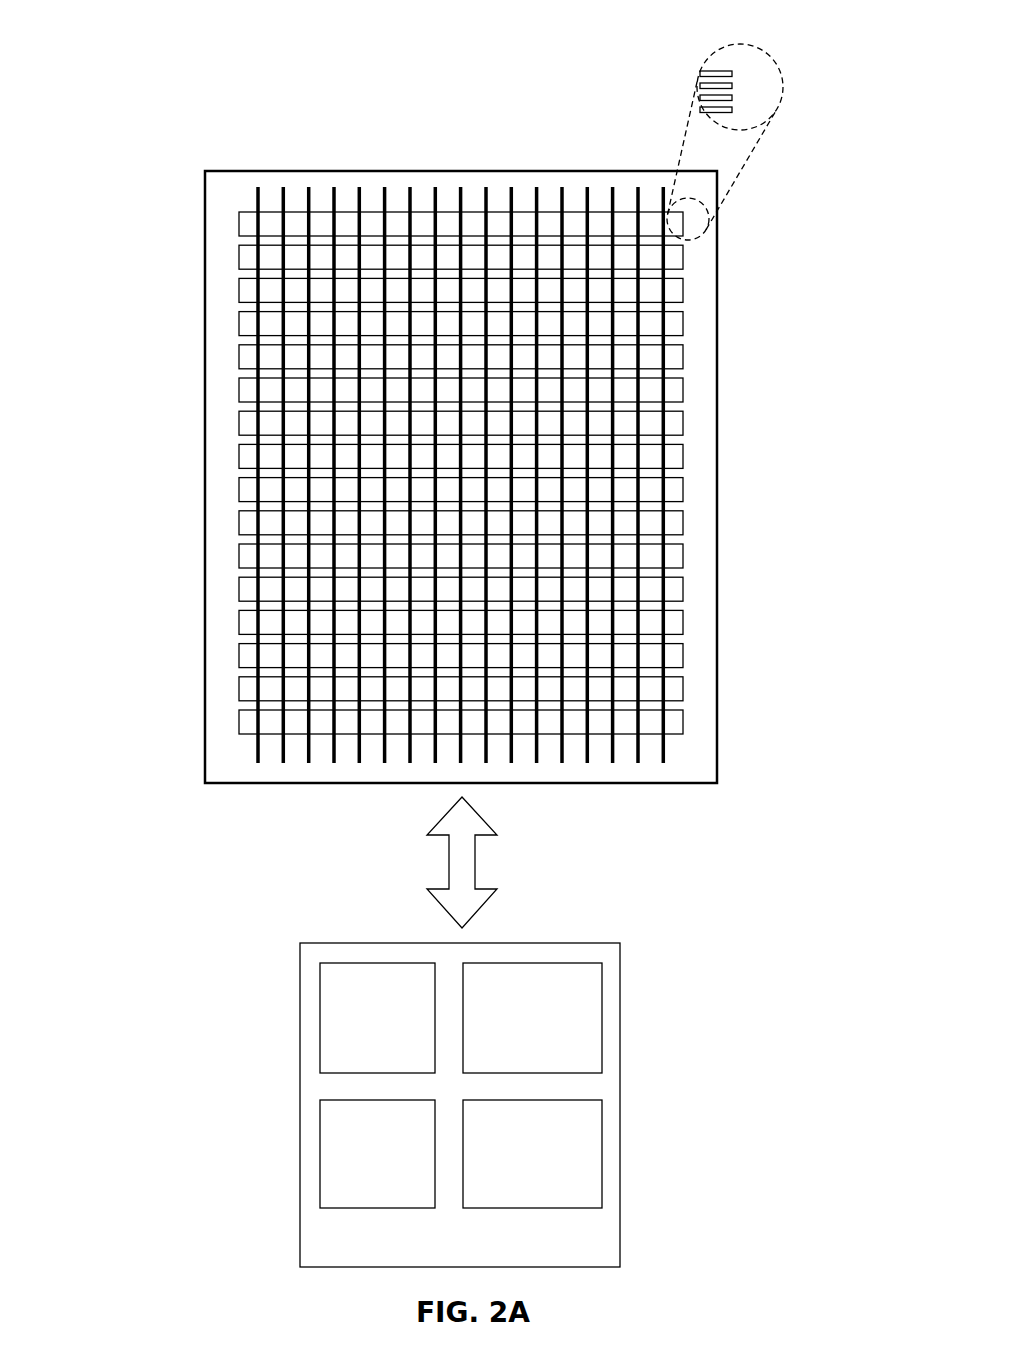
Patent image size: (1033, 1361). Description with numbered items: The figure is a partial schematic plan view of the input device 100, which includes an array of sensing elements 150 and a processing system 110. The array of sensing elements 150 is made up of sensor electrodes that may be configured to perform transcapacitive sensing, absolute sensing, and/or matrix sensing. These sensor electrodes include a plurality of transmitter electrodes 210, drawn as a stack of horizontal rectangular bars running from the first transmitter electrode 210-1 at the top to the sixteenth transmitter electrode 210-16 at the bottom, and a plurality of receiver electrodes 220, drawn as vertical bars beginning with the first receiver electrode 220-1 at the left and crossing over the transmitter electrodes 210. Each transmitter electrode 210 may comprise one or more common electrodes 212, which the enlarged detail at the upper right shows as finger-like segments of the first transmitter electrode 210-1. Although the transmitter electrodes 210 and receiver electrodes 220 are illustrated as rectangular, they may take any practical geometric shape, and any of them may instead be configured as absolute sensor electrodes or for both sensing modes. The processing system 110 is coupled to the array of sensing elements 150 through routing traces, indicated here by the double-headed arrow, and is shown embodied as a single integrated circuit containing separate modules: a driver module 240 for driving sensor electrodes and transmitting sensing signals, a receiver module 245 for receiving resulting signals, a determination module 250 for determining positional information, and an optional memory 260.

The input device 100 is at (170, 102).
The array of sensing elements 150 is at (318, 200).
The transmitter electrodes 210 is at (415, 402).
The first transmitter electrode 210-1 is at (444, 128).
The sixteenth transmitter electrode 210-16 is at (384, 746).
The common electrodes 212 is at (732, 74).
The receiver electrodes 220 is at (457, 407).
The first receiver electrode 220-1 is at (271, 407).
The processing system 110 is at (460, 1105).
The driver module 240 is at (377, 1018).
The receiver module 245 is at (377, 1154).
The determination module 250 is at (532, 1154).
The optional memory 260 is at (532, 1018).